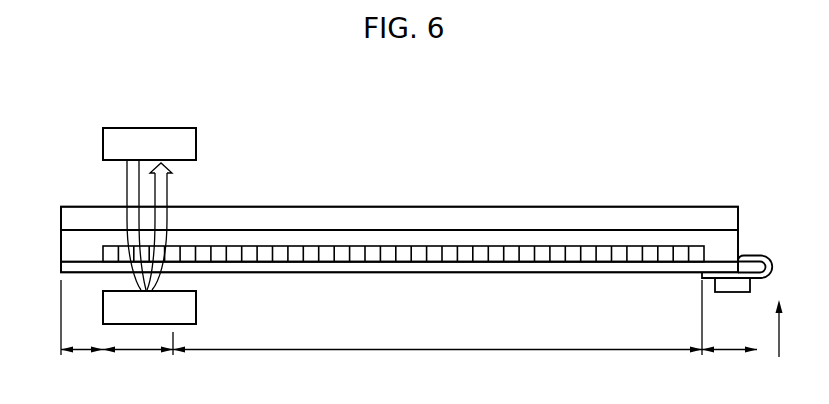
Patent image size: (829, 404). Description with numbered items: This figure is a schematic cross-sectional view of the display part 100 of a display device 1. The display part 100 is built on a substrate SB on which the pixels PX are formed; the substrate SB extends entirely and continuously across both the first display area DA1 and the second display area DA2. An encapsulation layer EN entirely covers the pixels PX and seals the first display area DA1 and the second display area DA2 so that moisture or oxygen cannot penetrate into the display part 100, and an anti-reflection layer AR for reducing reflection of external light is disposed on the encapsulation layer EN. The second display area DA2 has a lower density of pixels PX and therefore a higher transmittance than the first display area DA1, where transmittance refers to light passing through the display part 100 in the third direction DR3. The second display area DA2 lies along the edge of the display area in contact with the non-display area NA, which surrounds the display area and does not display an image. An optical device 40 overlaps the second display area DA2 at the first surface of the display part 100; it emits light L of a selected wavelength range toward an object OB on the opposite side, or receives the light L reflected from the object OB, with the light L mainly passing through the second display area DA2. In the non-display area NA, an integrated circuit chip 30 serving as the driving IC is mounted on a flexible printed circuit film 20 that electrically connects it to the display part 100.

The display device 1 is at (645, 140).
The display part 100 is at (55, 207).
The flexible printed circuit film 20 is at (750, 257).
The integrated circuit chip 30 is at (740, 283).
The optical device 40 is at (198, 143).
The light L is at (170, 190).
The object OB is at (198, 306).
The pixel PX is at (390, 242).
The encapsulation layer EN is at (557, 237).
The anti-reflection layer AR is at (708, 213).
The substrate SB is at (492, 268).
The non-display area NA is at (409, 366).
The first display area DA1 is at (437, 366).
The second display area DA2 is at (138, 366).
The third direction DR3 is at (800, 330).